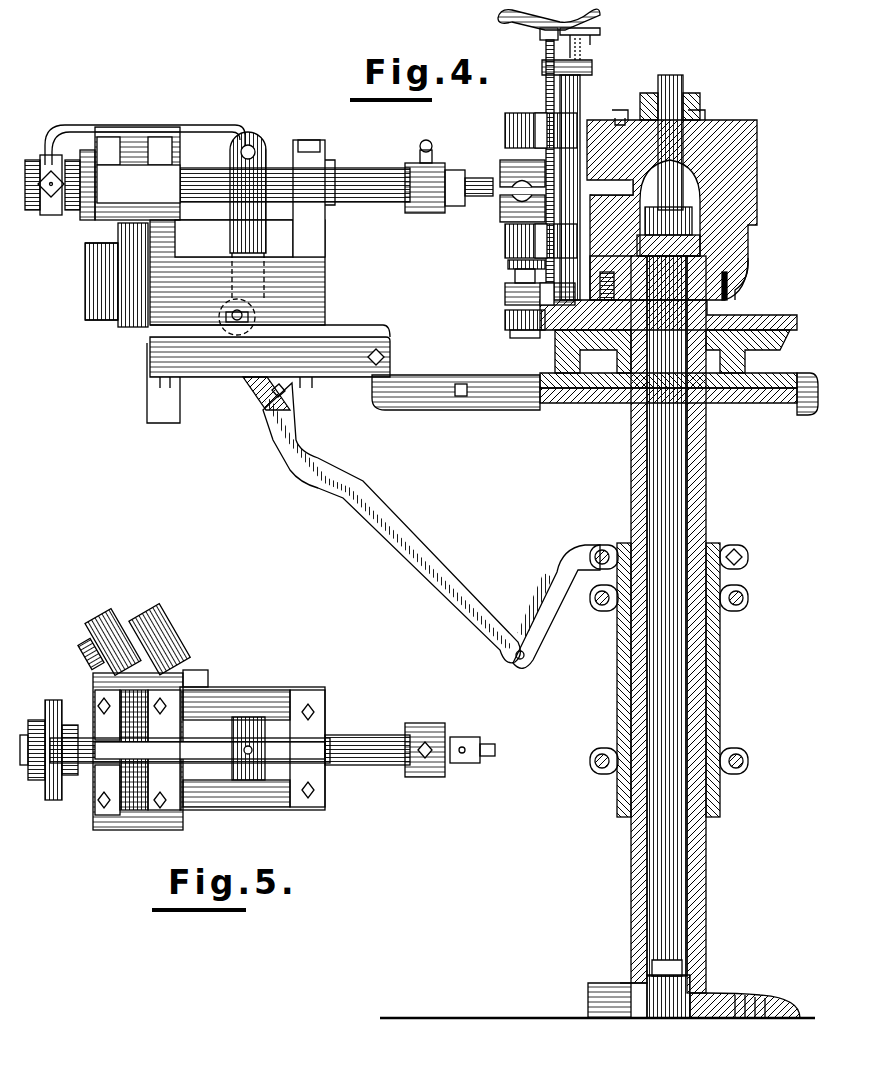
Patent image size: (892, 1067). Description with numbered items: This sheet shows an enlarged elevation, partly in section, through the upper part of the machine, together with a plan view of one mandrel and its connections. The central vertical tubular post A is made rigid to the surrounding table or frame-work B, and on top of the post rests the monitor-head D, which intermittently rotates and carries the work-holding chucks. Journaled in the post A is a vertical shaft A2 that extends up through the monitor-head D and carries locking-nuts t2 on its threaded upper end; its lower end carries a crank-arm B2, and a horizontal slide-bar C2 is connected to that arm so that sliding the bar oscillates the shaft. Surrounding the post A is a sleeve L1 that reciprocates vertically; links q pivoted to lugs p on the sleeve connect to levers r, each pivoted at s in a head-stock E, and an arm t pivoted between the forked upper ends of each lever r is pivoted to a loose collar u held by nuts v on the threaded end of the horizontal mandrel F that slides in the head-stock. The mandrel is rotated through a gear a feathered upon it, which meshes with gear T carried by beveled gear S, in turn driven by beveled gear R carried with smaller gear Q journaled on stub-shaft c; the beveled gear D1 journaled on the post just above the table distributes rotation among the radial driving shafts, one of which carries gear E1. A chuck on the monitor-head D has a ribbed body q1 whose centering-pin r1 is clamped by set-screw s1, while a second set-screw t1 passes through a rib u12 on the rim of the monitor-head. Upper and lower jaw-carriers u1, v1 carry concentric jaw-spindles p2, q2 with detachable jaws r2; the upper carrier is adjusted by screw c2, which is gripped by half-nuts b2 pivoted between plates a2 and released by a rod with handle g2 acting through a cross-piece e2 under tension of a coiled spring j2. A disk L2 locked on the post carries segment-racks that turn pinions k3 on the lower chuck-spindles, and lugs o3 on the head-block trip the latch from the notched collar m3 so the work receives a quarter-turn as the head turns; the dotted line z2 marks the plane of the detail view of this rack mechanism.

In FIG. 4, the central vertical tubular post A is at (632, 458).
In FIG. 4, the vertical shaft A2 is at (690, 470).
In FIG. 4, the sleeve L1 is at (722, 672).
In FIG. 4, the lugs p is at (598, 552).
In FIG. 4, the crank-arm B2 is at (660, 1018).
In FIG. 4, the monitor-head D is at (755, 186).
In FIG. 4, the locking-nuts t2 is at (690, 95).
In FIG. 4, the set-screw s1 is at (625, 180).
In FIG. 4, the second set-screw t1 is at (615, 118).
In FIG. 4, the vertical ribbed portion q1 is at (605, 120).
In FIG. 4, the disk L2 is at (765, 315).
In FIG. 4, the superimposed beveled gear D1 is at (562, 345).
In FIG. 4, the horizontal slide-bar C2 is at (738, 270).
In FIG. 4, the lugs or projections o3 is at (727, 287).
In FIG. 4, the dotted line z² z² z2 is at (497, 276).
In FIG. 4, the table or frame-work B is at (448, 375).
In FIG. 4, the gear E1 is at (318, 272).
In FIG. 4, the mandrel F is at (355, 176).
In FIG. 5, the mandrel F is at (354, 736).
In FIG. 4, the gear a is at (135, 150).
In FIG. 5, the gear a is at (132, 790).
In FIG. 4, the arm t is at (210, 125).
In FIG. 5, the arm t is at (190, 746).
In FIG. 4, the nuts v is at (33, 212).
In FIG. 5, the nuts v is at (68, 782).
In FIG. 4, the loose collar u is at (53, 212).
In FIG. 5, the loose collar u is at (52, 720).
In FIG. 4, the lever r is at (258, 222).
In FIG. 5, the lever r is at (252, 720).
In FIG. 4, the pivot s is at (252, 315).
In FIG. 4, the beveled gear S is at (95, 318).
In FIG. 4, the gear T is at (126, 326).
In FIG. 4, the centering-pin r1 is at (388, 508).
In FIG. 4, the links q is at (545, 562).
In FIG. 4, the plates a2 is at (512, 20).
In FIG. 4, the cross-piece e2 is at (542, 38).
In FIG. 4, the handle g2 is at (600, 30).
In FIG. 4, the coiled spring j2 is at (600, 38).
In FIG. 4, the half-nuts b2 is at (592, 64).
In FIG. 4, the rib u12 is at (585, 80).
In FIG. 4, the screw c2 is at (546, 96).
In FIG. 4, the upper jaw-spindle p2 is at (512, 215).
In FIG. 4, the detachable jaws r2 is at (512, 170).
In FIG. 4, the upper jaw-carrier u1 is at (512, 128).
In FIG. 4, the lower jaw-carrier v1 is at (512, 238).
In FIG. 4, the lower jaw-spindle q2 is at (500, 232).
In FIG. 4, the notched collar m3 is at (508, 264).
In FIG. 4, the pinion k3 is at (505, 320).
In FIG. 5, the head-stock E is at (268, 690).
In FIG. 5, the smaller gear Q is at (108, 618).
In FIG. 5, the beveled gear R is at (168, 625).
In FIG. 5, the stub-shaft c is at (90, 645).